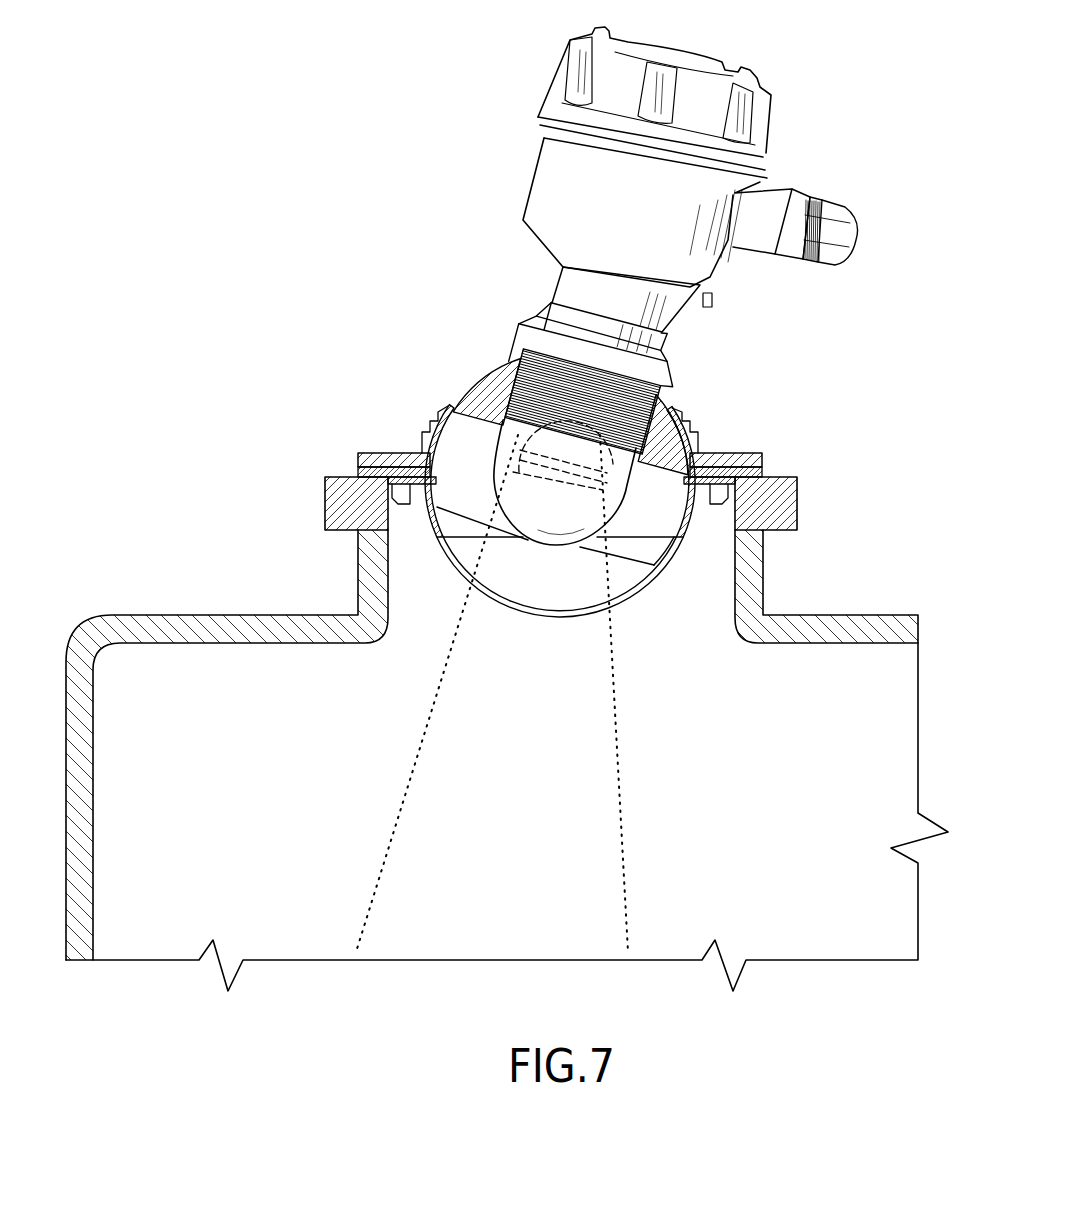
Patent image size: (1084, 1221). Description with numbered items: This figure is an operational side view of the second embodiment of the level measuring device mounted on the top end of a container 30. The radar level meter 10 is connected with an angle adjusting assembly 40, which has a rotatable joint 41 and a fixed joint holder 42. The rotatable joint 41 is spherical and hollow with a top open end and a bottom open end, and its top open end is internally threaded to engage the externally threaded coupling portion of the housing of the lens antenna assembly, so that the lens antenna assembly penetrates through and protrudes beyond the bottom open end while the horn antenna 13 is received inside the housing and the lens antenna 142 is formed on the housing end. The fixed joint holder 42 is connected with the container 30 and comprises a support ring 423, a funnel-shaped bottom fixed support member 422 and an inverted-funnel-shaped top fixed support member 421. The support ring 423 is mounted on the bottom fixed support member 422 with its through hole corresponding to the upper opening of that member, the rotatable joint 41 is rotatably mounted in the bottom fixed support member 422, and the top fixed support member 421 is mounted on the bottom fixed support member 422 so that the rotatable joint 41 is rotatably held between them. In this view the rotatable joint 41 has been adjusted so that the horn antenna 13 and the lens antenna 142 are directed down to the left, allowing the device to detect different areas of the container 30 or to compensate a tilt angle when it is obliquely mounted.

The radar level meter 10 is at (507, 74).
The horn antenna 13 is at (613, 470).
The lens antenna 142 is at (555, 545).
The container 30 is at (204, 628).
The angle adjusting assembly 40 is at (394, 375).
The rotatable joint 41 is at (495, 382).
The fixed joint holder 42 is at (371, 451).
The top fixed support member 421 is at (713, 457).
The bottom fixed support member 422 is at (432, 524).
The support ring 423 is at (760, 467).